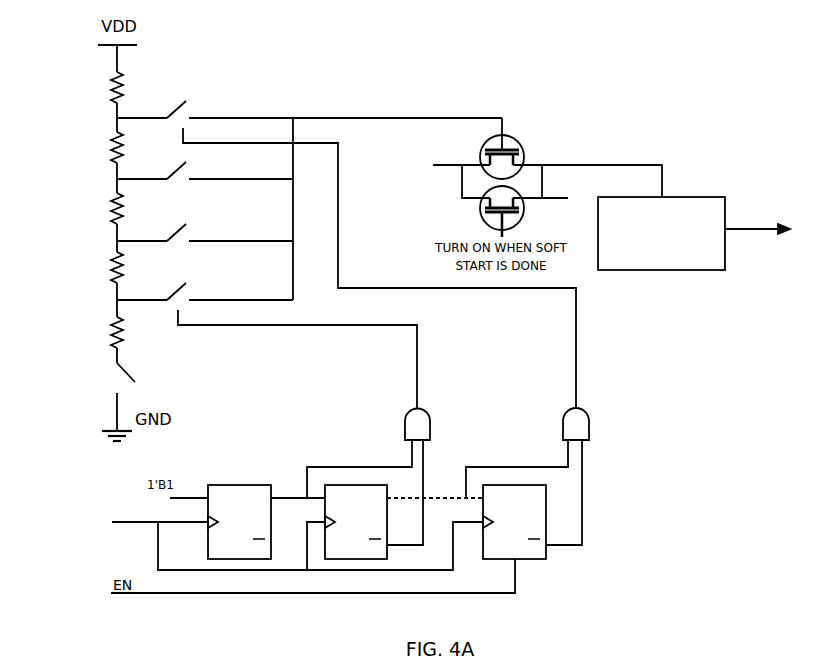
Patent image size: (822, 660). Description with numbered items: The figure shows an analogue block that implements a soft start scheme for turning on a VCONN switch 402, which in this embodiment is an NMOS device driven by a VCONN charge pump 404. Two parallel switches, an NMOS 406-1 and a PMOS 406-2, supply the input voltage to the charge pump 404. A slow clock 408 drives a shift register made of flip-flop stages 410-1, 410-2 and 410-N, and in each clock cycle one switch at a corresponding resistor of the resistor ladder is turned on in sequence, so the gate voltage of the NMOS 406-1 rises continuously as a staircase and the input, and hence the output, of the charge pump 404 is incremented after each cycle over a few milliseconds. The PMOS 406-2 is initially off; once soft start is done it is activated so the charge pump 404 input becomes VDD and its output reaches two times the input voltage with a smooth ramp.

The VCONN switch 402 is at (755, 216).
The VCONN charge pump 404 is at (648, 260).
The NMOS switch 406-1 is at (447, 160).
The PMOS switch 406-2 is at (443, 235).
The slow clock 408 is at (107, 541).
The clock cycle flip-flop 410-1 is at (260, 529).
The clock cycle flip-flop 410-2 is at (376, 529).
The clock cycle flip-flop 410-N is at (536, 529).